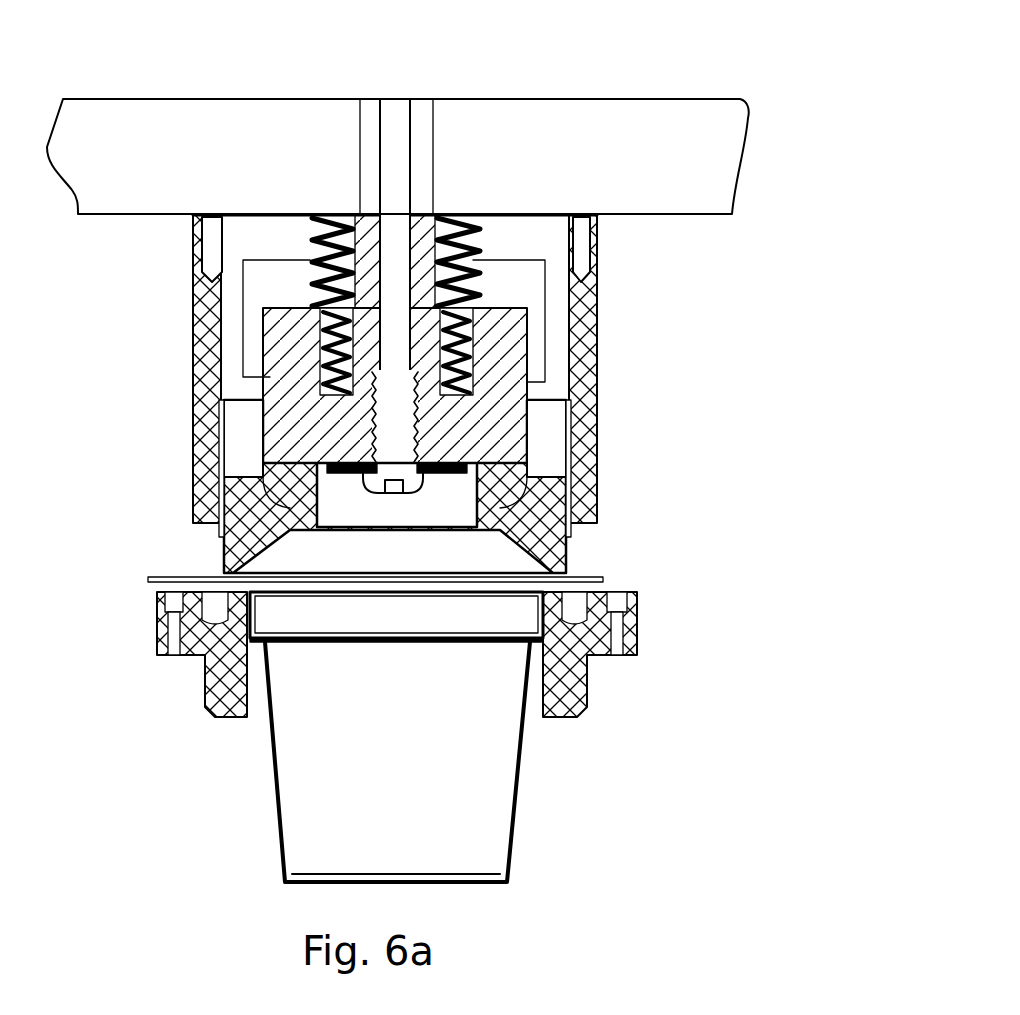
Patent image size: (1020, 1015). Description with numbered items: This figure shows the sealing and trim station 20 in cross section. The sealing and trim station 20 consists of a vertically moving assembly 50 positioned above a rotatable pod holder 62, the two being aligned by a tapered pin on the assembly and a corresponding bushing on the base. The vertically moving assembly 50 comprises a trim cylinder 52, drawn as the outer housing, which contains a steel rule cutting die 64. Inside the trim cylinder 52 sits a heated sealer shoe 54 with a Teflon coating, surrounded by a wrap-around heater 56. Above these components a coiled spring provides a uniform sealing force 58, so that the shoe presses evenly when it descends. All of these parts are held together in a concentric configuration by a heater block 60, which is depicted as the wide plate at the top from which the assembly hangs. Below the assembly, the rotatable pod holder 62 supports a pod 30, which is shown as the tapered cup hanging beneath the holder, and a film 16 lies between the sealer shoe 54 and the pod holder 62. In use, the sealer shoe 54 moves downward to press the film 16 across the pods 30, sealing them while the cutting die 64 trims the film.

The sealing and trim station 20 is at (436, 290).
The heater block 60 is at (738, 152).
The uniform sealing force 58 is at (312, 260).
The trim cylinder 52 is at (590, 312).
The wrap-around heater 56 is at (273, 372).
The steel rule cutting die 64 is at (590, 443).
The heated sealer shoe 54 is at (258, 503).
The vertically moving assembly 50 is at (442, 336).
The film 16 is at (173, 578).
The rotatable pod holder 62 is at (636, 636).
The pods 30 is at (500, 796).